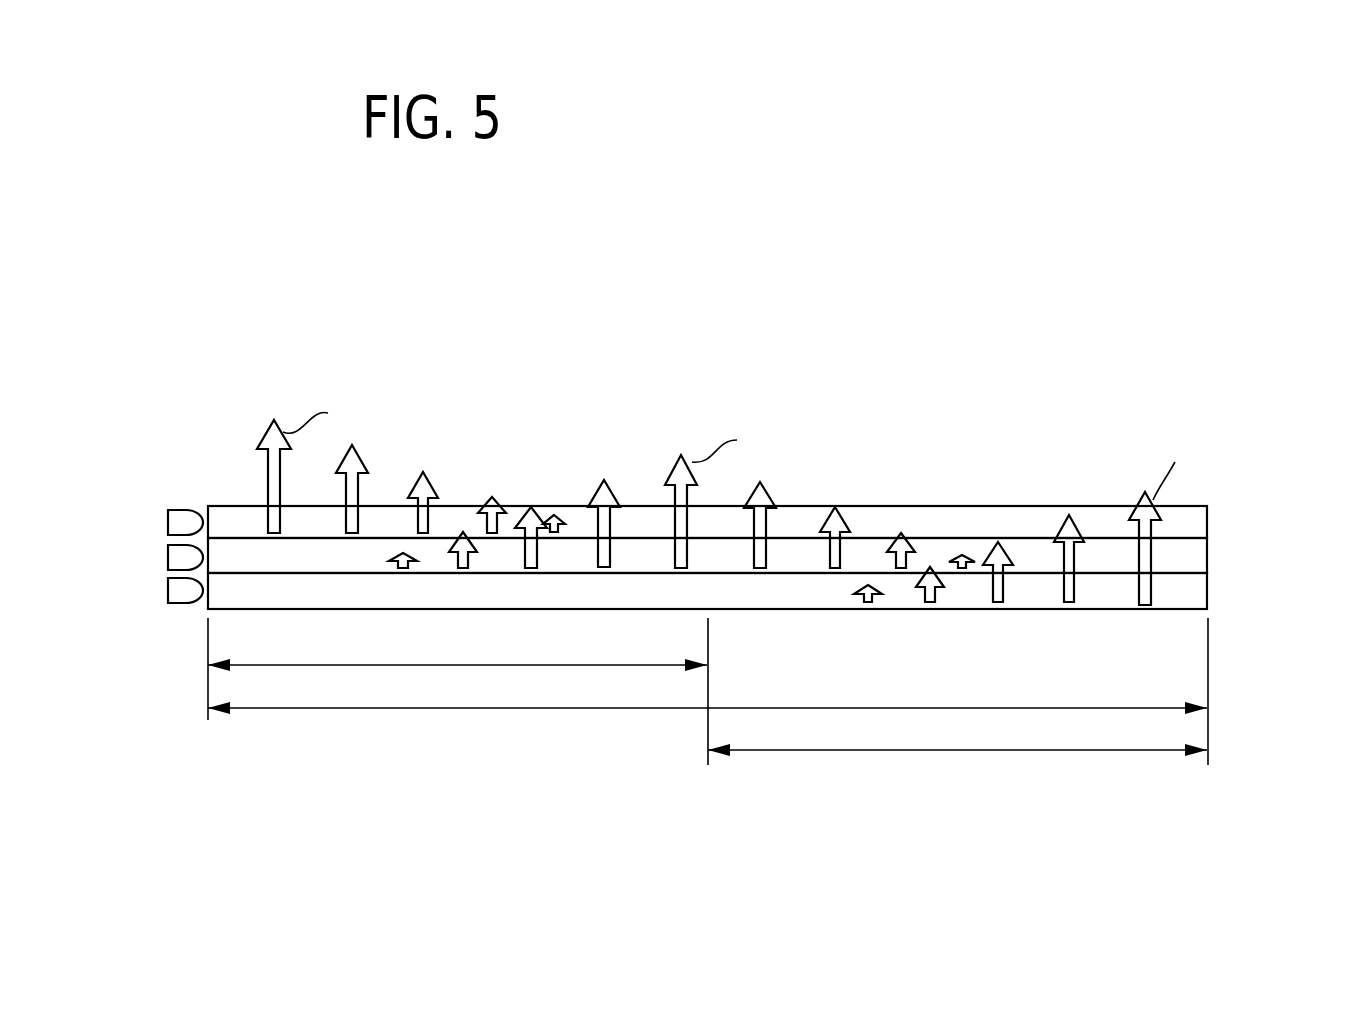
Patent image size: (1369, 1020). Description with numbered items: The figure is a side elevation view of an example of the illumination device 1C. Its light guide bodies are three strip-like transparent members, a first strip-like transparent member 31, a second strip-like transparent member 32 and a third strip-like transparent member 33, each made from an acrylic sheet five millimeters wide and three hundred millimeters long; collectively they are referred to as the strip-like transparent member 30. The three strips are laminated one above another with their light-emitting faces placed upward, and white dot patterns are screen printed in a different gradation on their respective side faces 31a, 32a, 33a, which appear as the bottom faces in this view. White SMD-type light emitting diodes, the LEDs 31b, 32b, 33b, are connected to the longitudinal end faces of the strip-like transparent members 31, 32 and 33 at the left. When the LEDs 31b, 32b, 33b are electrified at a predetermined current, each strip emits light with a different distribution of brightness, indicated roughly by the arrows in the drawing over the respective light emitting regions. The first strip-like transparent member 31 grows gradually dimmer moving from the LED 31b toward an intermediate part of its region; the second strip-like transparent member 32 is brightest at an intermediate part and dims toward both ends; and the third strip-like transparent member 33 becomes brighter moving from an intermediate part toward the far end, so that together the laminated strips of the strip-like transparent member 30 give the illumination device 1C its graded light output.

The illumination device 1C is at (996, 424).
The strip-like transparent member 30 is at (1297, 460).
The first strip-like transparent member 31 is at (1210, 520).
The second strip-like transparent member 32 is at (1210, 557).
The third strip-like transparent member 33 is at (1210, 587).
The side face of first strip-like transparent member 31a is at (855, 542).
The side face of second strip-like transparent member 32a is at (772, 573).
The side face of third strip-like transparent member 33a is at (615, 607).
The LED 31b is at (168, 520).
The LED 32b is at (168, 555).
The LED 33b is at (168, 593).